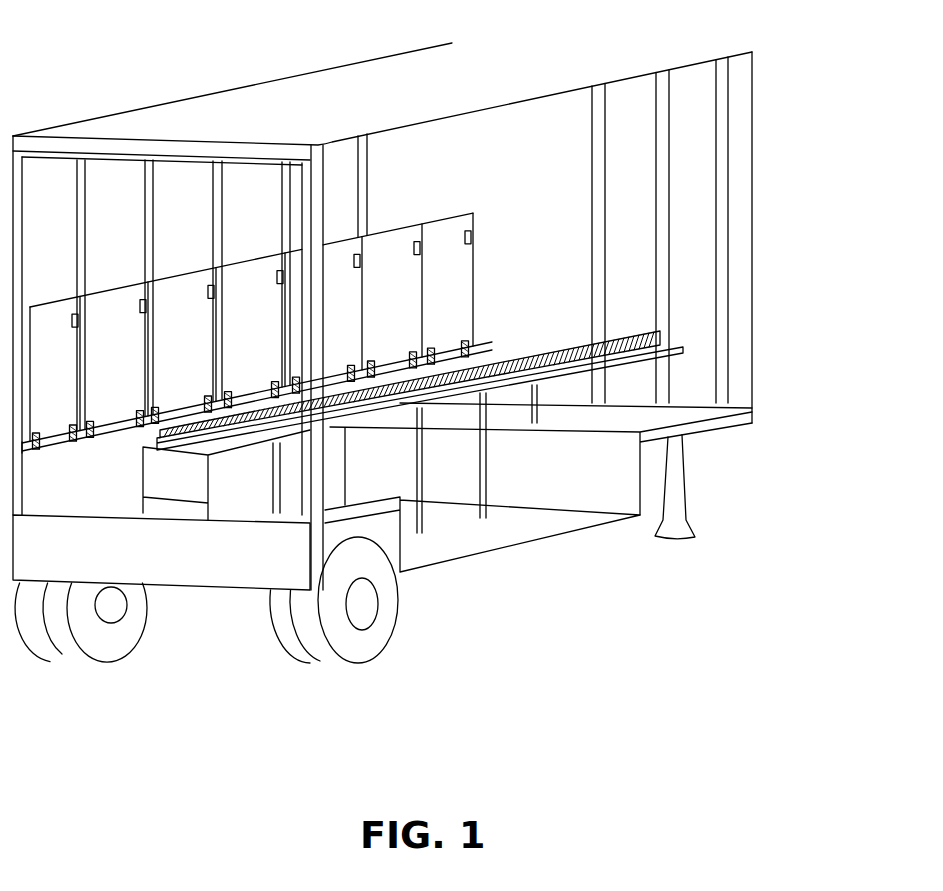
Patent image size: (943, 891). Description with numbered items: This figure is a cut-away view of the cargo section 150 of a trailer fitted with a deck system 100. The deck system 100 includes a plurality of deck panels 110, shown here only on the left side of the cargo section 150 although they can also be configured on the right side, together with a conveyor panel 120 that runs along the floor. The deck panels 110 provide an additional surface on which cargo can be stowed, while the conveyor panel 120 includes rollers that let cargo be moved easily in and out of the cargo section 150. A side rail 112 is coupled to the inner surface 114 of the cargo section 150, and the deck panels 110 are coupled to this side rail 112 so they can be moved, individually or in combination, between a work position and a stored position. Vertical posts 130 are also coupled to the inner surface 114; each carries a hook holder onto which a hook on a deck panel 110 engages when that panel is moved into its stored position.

The deck system 100 is at (558, 233).
The deck panel 110 is at (66, 291).
The side rail 112 is at (51, 448).
The inner surface 114 is at (268, 239).
The conveyor panel 120 is at (505, 336).
The vertical post 130 is at (143, 210).
The cargo section 150 is at (542, 65).